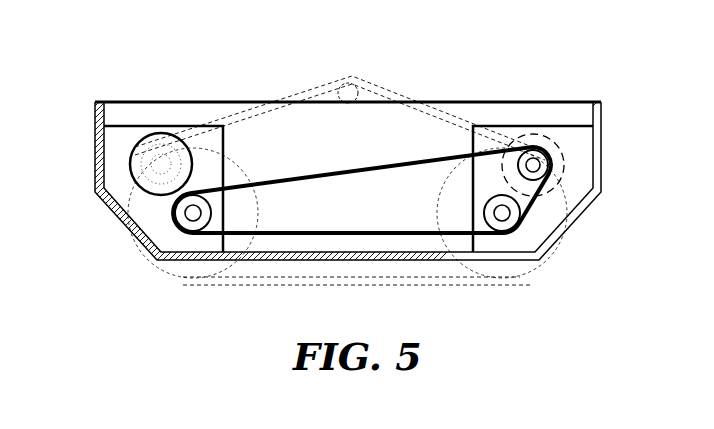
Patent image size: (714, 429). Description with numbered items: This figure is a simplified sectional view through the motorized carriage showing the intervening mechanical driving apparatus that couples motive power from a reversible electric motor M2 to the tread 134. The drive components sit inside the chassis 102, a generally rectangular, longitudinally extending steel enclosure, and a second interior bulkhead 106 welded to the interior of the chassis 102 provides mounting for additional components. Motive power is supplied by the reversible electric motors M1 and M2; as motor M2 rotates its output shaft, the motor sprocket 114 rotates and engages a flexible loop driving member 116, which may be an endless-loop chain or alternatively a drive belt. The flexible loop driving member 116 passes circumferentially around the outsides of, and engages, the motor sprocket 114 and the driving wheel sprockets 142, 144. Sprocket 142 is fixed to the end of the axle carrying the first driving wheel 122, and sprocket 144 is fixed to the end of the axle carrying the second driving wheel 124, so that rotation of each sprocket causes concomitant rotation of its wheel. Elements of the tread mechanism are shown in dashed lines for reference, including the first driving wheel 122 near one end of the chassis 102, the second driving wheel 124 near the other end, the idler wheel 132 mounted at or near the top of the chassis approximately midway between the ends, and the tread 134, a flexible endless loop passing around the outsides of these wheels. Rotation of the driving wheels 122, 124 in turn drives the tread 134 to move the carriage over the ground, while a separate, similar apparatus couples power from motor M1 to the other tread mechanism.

The chassis 102 is at (95, 187).
The second interior bulkhead 106 is at (518, 126).
The motor sprocket 114 is at (518, 165).
The flexible loop driving member 116 is at (397, 165).
The first driving wheel 122 is at (236, 172).
The second driving wheel 124 is at (443, 200).
The idler wheel 132 is at (338, 90).
The tread 134 is at (141, 262).
The sprocket 142 is at (212, 213).
The sprocket 144 is at (483, 212).
The reversible electric motor M1 is at (131, 155).
The reversible electric motor M2 is at (565, 152).